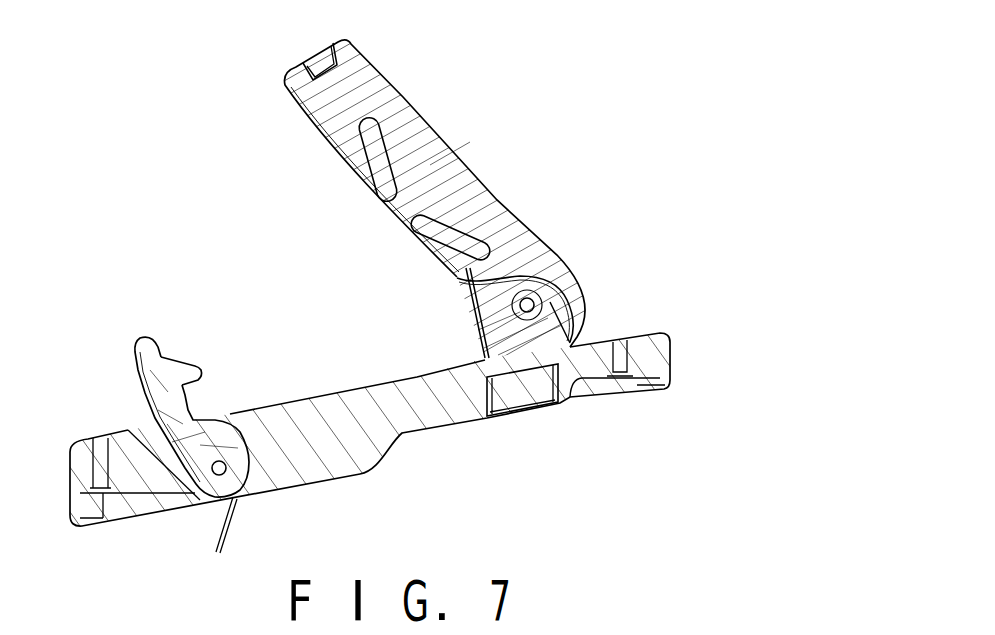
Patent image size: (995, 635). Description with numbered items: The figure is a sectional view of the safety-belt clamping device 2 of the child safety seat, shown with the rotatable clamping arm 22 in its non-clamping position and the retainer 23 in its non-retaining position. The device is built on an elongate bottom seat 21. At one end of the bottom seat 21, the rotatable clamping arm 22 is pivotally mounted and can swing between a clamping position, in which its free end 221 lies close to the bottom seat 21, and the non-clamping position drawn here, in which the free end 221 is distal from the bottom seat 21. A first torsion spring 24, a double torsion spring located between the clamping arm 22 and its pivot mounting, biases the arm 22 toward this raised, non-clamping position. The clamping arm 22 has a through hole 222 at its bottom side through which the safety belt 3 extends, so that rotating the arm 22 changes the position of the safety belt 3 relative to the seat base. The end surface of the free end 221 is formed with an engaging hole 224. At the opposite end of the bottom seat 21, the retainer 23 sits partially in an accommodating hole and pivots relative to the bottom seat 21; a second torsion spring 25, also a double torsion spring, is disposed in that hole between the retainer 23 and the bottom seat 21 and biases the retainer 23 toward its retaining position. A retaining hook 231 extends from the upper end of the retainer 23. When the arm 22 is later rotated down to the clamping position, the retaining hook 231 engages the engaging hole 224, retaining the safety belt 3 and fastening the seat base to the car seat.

The safety-belt clamping device 2 is at (575, 253).
The bottom seat 21 is at (413, 407).
The rotatable clamping arm 22 is at (418, 110).
The free end 221 is at (355, 83).
The through hole 222 is at (407, 203).
The engaging hole 224 is at (318, 40).
The retainer 23 is at (137, 392).
The retaining hook 231 is at (200, 370).
The first torsion spring 24 is at (588, 312).
The second torsion spring 25 is at (175, 418).
The safety belt 3 is at (463, 143).